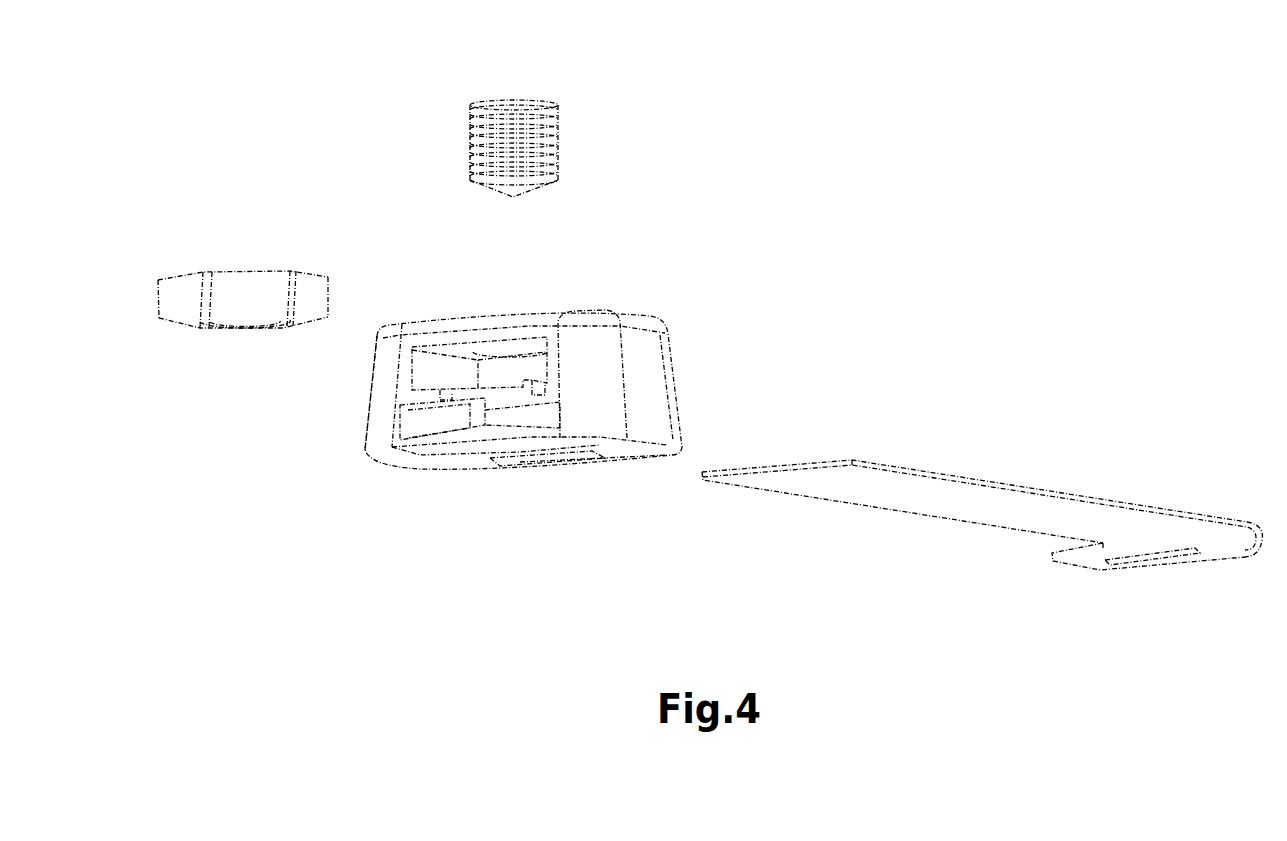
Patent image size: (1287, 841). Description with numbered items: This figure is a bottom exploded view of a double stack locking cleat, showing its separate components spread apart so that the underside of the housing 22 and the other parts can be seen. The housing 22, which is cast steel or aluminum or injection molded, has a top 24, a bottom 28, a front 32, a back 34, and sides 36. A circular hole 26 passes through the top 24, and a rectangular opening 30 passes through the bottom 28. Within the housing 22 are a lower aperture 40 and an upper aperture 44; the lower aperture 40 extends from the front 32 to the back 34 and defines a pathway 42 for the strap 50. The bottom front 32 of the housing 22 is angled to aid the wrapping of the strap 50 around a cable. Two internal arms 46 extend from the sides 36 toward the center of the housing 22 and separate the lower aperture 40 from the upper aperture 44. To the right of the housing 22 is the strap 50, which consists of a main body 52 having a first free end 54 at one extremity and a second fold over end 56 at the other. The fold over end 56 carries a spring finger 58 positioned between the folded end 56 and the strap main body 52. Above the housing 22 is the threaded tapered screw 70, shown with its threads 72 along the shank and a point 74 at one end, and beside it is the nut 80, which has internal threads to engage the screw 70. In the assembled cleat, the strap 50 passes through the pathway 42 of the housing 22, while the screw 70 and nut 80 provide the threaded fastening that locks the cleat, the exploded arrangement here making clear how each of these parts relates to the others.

The housing 22 is at (510, 396).
The top 24 is at (430, 320).
The circular hole 26 is at (495, 345).
The bottom 28 is at (410, 460).
The rectangular opening 30 is at (555, 462).
The front 32 is at (382, 417).
The back 34 is at (672, 390).
The sides 36 is at (375, 393).
The lower aperture 40 is at (410, 423).
The pathway 42 is at (512, 418).
The upper aperture 44 is at (427, 372).
The internal arms 46 is at (420, 398).
The strap 50 is at (982, 513).
The main body 52 is at (1067, 495).
The first free end 54 is at (828, 478).
The second fold over end 56 is at (1088, 565).
The spring finger 58 is at (1160, 565).
The threaded tapered screw 70 is at (572, 126).
The threads 72 is at (553, 143).
The point 74 is at (515, 197).
The nut 80 is at (167, 300).